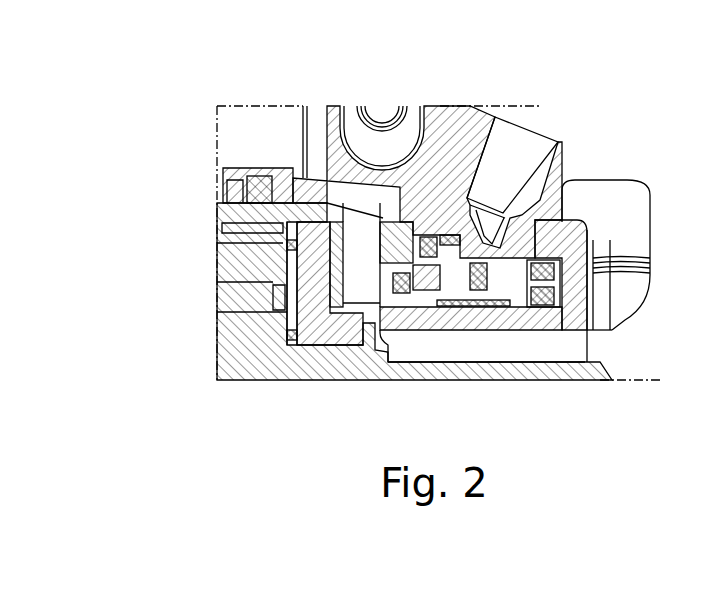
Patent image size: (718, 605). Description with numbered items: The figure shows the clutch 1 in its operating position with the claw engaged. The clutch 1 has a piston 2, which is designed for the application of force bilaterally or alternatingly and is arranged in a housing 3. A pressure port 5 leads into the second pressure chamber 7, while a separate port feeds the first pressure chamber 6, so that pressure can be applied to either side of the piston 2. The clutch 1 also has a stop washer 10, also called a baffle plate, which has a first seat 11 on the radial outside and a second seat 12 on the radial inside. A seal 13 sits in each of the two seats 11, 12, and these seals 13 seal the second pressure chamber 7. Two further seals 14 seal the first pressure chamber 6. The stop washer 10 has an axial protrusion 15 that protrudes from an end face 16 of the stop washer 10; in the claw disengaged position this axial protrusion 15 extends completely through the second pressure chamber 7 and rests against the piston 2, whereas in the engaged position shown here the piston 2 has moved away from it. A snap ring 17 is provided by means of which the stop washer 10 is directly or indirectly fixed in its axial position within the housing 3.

The clutch 1 is at (367, 400).
The piston 2 is at (420, 325).
The housing 3 is at (548, 320).
The pressure port 5 is at (507, 160).
The first pressure chamber 6 is at (590, 267).
The second pressure chamber 7 is at (547, 218).
The stop washer 10 is at (488, 112).
The first seat 11 is at (447, 233).
The second seat 12 is at (458, 308).
The seal 13 is at (420, 240).
The further seal 14 is at (640, 195).
The axial protrusion 15 is at (480, 300).
The end face 16 is at (512, 268).
The snap ring 17 is at (290, 180).